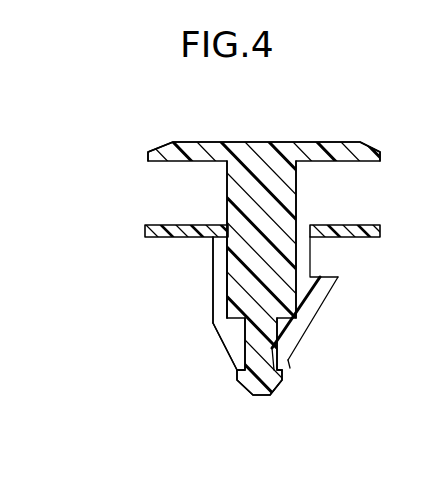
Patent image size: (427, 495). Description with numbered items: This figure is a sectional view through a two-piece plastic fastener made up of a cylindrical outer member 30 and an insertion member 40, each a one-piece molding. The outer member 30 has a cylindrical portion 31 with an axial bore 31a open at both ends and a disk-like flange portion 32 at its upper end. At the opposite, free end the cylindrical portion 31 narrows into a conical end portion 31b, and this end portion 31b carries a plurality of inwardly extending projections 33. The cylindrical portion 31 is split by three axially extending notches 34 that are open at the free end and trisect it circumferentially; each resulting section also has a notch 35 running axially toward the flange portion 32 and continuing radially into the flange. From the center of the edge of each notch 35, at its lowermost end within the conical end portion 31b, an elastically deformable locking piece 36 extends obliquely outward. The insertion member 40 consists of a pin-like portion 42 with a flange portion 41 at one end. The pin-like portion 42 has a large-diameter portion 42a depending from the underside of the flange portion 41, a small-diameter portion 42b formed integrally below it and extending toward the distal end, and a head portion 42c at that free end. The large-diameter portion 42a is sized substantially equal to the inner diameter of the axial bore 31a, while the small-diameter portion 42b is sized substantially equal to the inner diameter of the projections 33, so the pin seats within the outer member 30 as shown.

The cylindrical outer member 30 is at (226, 297).
The cylindrical portion 31 is at (212, 323).
The axial bore 31a is at (243, 255).
The conical end portion 31b is at (287, 360).
The flange portion 32 is at (166, 238).
The inwardly extending projections 33 is at (237, 362).
The axially extending notch 34 is at (224, 268).
The notch 35 is at (345, 226).
The elastically deformable locking piece 36 is at (323, 302).
The insertion member 40 is at (302, 140).
The flange portion 41 is at (362, 142).
The pin-like portion 42 is at (296, 190).
The large-diameter portion 42a is at (231, 190).
The small-diameter portion 42b is at (240, 350).
The head portion 42c is at (250, 391).